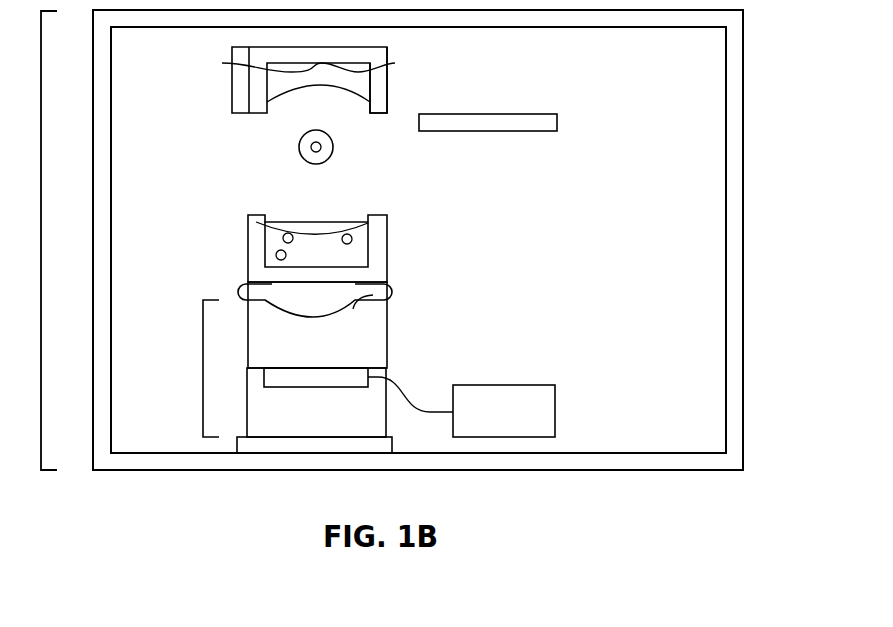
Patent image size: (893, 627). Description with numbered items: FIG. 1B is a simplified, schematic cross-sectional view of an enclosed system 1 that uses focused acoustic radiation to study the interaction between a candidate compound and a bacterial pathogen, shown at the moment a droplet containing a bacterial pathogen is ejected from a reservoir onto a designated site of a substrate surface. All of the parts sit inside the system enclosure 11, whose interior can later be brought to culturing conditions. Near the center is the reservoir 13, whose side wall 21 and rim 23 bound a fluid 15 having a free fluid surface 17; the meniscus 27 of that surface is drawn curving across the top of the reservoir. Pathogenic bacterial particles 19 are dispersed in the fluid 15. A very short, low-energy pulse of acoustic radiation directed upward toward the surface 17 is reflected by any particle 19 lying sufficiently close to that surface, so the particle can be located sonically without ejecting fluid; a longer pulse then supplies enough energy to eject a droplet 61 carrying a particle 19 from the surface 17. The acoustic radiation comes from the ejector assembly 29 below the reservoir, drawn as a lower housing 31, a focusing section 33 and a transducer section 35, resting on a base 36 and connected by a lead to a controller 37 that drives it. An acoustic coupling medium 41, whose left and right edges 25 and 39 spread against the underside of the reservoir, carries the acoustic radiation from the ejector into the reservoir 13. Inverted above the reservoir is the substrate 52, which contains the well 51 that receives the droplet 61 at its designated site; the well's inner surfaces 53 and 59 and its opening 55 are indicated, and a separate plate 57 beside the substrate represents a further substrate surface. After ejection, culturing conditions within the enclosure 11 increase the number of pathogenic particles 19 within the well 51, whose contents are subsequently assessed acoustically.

The device 1 is at (41, 243).
The system enclosure 11 is at (738, 238).
The mount body 13 is at (252, 247).
The cavity 15 is at (331, 266).
The free fluid surface 17 is at (356, 225).
The pathogenic particles 19 is at (298, 147).
The side wall 21 is at (360, 254).
The edge 23 is at (281, 222).
The left flange 25 is at (240, 291).
The curved surface 27 is at (318, 228).
The base section 29 is at (203, 368).
The lower block 31 is at (329, 422).
The middle block 33 is at (329, 357).
The sensor 35 is at (347, 375).
The base plate 36 is at (395, 448).
The controller 37 is at (515, 424).
The right flange 39 is at (393, 291).
The lens holder 41 is at (329, 317).
The well 51 is at (380, 85).
The upper frame 52 is at (243, 107).
The upper lens surface 53 is at (224, 63).
The lens edge 55 is at (395, 63).
The plate 57 is at (548, 121).
The lower lens surface 59 is at (278, 83).
The fiber port 61 is at (333, 147).